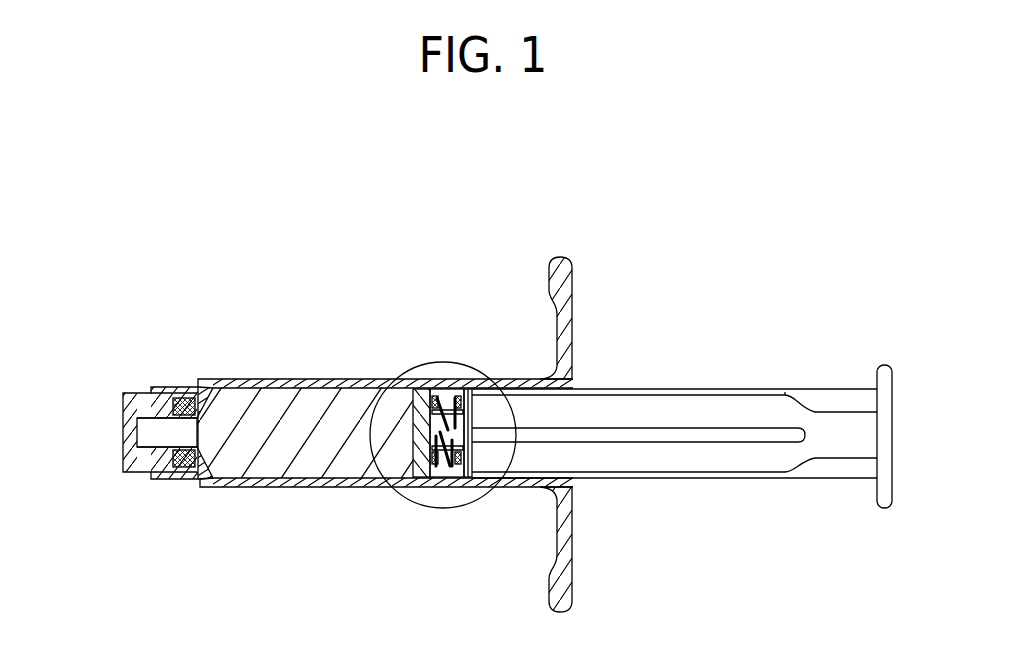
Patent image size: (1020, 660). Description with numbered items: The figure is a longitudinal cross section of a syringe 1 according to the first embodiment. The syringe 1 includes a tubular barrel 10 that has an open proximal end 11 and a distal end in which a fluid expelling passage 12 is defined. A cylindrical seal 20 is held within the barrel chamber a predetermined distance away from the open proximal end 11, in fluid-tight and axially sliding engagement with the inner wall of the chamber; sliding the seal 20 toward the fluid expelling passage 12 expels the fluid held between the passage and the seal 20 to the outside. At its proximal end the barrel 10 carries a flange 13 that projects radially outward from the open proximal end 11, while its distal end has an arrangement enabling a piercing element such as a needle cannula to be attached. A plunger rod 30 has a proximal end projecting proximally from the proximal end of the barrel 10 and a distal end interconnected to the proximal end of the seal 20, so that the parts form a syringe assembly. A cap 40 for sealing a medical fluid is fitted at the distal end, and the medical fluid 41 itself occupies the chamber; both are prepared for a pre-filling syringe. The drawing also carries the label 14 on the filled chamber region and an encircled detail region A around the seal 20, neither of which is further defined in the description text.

The syringe 1 is at (262, 313).
The tubular barrel 10 is at (338, 378).
The open proximal end 11 is at (574, 386).
The fluid expelling passage 12 is at (138, 386).
The flange 13 is at (565, 274).
The drug solution 14 is at (291, 440).
The cylindrical seal 20 is at (421, 462).
The plunger rod 30 is at (735, 472).
The cap 40 is at (122, 470).
The medical fluid 41 is at (200, 486).
The enlarged region A is at (481, 500).